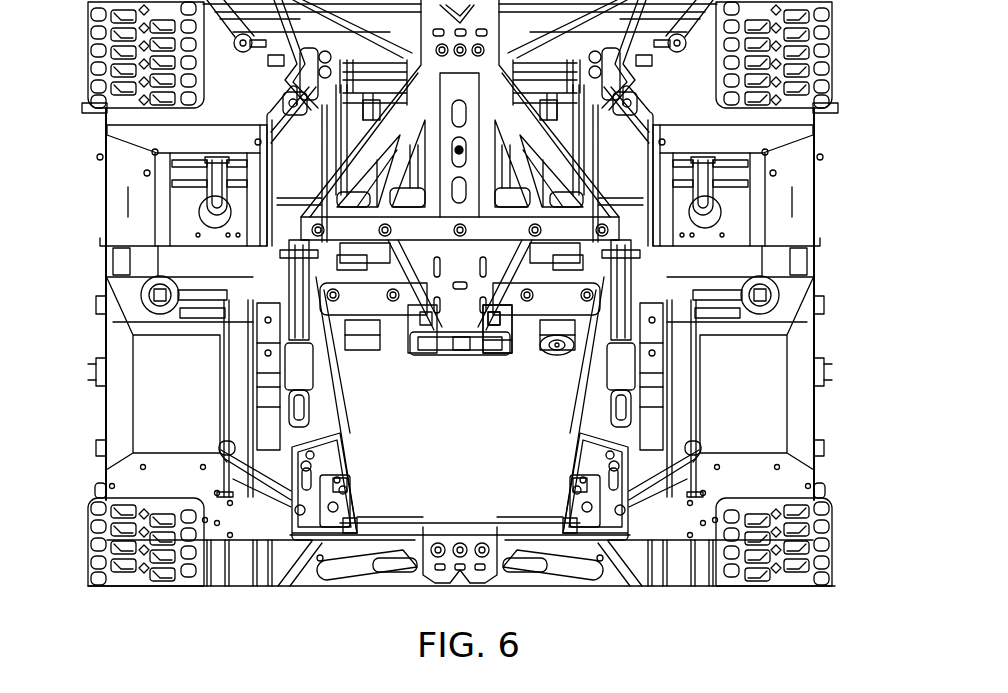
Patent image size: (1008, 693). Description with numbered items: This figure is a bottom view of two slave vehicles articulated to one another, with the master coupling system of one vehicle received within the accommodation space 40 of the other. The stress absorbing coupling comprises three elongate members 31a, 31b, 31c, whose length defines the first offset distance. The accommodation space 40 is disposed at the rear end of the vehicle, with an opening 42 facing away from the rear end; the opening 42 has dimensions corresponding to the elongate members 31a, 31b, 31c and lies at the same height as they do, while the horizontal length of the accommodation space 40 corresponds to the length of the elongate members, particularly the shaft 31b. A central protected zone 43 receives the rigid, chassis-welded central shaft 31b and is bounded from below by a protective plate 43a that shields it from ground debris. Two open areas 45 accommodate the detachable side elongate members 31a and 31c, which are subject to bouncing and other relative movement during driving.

The accommodation space 40 is at (562, 248).
The opening 42 is at (285, 218).
The side elongate member 31a is at (290, 282).
The central shaft 31b is at (500, 325).
The side elongate member 31c is at (623, 357).
The central protected zone 43 is at (393, 308).
The protective plate 43a is at (363, 443).
The open area 45 is at (103, 313).